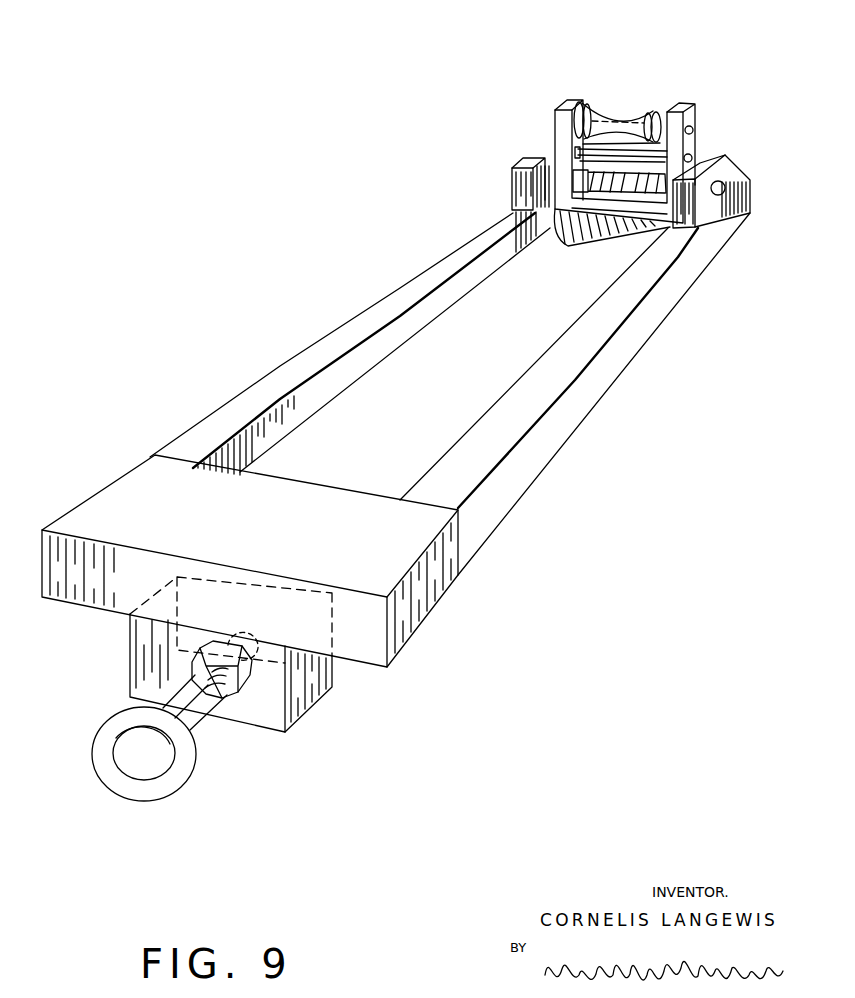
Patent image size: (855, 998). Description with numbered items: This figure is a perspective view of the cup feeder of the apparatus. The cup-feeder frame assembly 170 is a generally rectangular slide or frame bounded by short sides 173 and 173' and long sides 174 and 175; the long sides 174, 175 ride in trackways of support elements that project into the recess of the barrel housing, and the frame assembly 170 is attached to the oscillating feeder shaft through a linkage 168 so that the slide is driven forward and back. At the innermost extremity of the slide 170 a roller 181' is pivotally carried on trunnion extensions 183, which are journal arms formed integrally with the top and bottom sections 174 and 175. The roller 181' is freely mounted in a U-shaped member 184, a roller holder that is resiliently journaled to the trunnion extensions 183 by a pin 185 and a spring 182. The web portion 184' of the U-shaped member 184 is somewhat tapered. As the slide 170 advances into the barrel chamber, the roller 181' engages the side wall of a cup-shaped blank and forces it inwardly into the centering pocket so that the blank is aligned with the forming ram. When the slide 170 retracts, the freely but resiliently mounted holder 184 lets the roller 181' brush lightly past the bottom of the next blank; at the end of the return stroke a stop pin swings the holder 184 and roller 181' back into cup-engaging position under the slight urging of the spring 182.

The linkage 168 is at (197, 774).
The cup-feeder frame assembly 170 is at (434, 265).
The short side 173 is at (250, 593).
The short side 173' is at (742, 170).
The long side 174 is at (633, 345).
The long side 175 is at (380, 306).
The roller 181' is at (639, 100).
The spring 182 is at (600, 180).
The trunnion extensions 183 is at (537, 158).
The U-shaped member 184 is at (563, 161).
The web portion 184' is at (589, 258).
The pin 185 is at (585, 173).